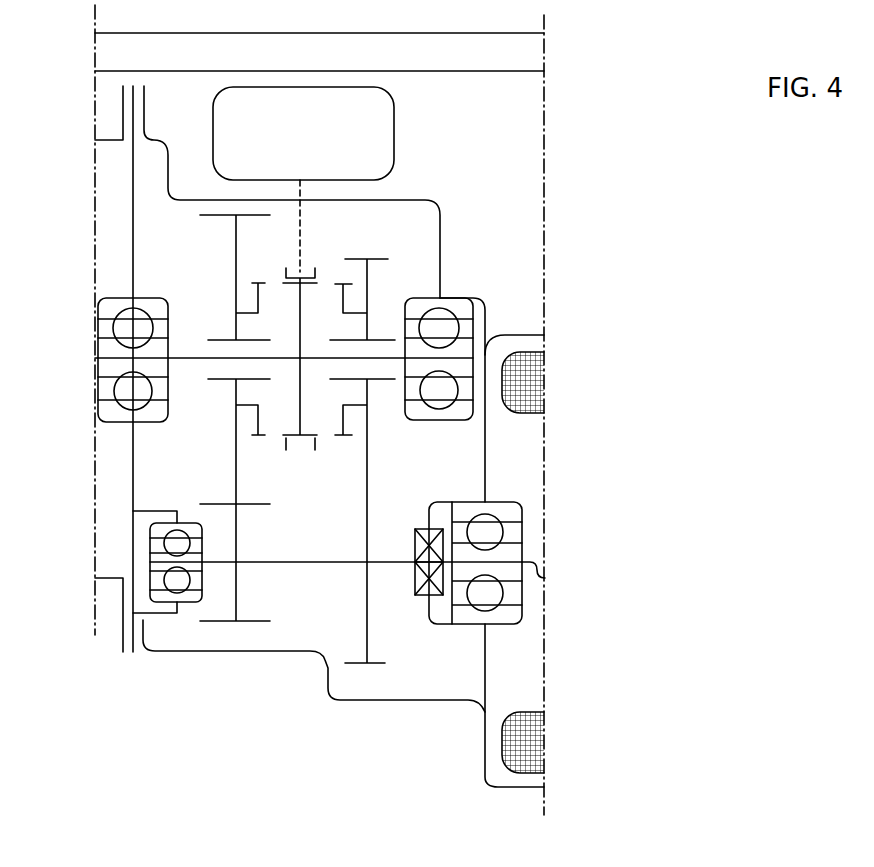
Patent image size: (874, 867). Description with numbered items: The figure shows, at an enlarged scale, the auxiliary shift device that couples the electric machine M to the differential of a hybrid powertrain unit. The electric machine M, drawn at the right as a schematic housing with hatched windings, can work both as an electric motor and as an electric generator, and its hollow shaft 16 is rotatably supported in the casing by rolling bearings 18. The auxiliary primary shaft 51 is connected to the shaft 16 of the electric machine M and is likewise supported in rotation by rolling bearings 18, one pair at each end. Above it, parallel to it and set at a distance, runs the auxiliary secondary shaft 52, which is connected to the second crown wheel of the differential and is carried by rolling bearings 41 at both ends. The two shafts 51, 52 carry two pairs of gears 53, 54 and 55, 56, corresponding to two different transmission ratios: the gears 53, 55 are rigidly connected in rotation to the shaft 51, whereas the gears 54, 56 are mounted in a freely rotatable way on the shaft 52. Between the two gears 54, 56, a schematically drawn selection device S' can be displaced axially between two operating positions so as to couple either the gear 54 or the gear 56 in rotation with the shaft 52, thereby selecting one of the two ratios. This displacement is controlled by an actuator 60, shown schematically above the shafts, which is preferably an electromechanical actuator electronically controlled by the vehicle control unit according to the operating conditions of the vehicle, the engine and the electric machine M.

The actuator 60 is at (377, 132).
The electric machine M is at (487, 782).
The selection device S' is at (320, 315).
The auxiliary secondary shaft 52 is at (190, 362).
The gear 54 is at (235, 269).
The gear 56 is at (367, 282).
The gear 53 is at (232, 602).
The gear 55 is at (367, 638).
The auxiliary primary shaft 51 is at (315, 565).
The shaft 16 is at (545, 578).
The rolling bearings 41 is at (135, 327).
The rolling bearings 18 is at (488, 530).